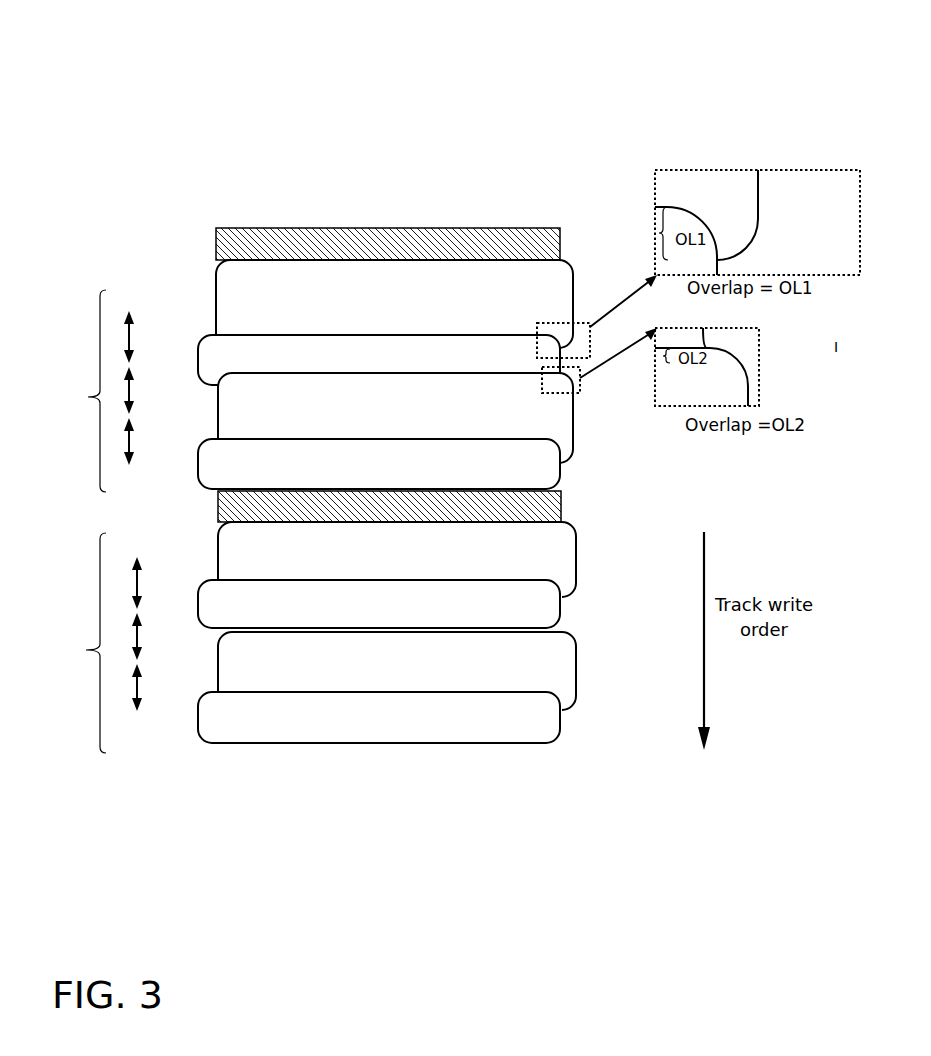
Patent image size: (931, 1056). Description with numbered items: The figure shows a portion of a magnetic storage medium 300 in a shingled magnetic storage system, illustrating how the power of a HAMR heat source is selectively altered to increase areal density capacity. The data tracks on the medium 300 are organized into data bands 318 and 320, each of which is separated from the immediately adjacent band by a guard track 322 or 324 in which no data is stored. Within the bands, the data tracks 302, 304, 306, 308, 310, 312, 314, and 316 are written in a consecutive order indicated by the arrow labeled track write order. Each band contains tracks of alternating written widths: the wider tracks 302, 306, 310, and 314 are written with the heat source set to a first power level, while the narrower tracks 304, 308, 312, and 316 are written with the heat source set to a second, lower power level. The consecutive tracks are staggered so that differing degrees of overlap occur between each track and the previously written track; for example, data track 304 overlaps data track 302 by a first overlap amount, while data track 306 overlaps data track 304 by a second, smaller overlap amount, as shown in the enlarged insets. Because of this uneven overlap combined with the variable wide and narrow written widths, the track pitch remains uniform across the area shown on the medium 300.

The magnetic storage medium 300 is at (127, 61).
The data track 302 is at (620, 309).
The data track 304 is at (620, 365).
The data track 306 is at (620, 416).
The data track 308 is at (108, 467).
The data track 310 is at (620, 555).
The data track 312 is at (620, 611).
The data track 314 is at (117, 662).
The data track 316 is at (620, 713).
The data band 318 is at (118, 391).
The data band 320 is at (119, 643).
The guard track 322 is at (343, 252).
The guard track 324 is at (348, 515).